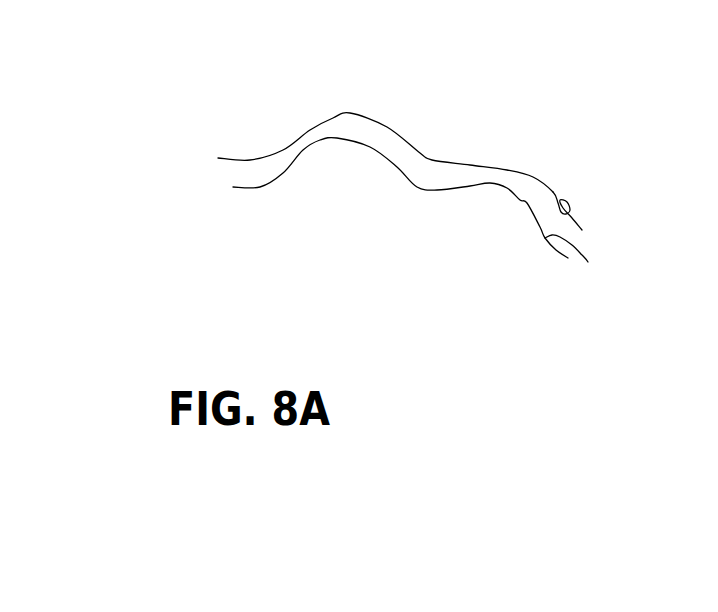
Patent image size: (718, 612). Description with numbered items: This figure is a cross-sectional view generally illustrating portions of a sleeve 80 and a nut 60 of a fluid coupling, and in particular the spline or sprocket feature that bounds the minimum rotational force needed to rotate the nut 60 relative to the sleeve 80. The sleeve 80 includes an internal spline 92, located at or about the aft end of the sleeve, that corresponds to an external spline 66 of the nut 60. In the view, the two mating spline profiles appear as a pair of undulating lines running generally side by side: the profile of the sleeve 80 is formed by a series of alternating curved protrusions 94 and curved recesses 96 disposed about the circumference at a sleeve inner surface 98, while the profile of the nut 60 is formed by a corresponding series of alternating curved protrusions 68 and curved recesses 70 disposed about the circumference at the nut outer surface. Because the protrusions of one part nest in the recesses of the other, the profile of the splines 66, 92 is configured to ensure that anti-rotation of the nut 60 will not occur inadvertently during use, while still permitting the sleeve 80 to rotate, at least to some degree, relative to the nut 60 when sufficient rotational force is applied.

The nut 60 is at (460, 184).
The external spline 66 is at (588, 262).
The curved protrusions 68 is at (400, 227).
The curved recesses 70 is at (418, 192).
The sleeve 80 is at (508, 167).
The internal spline 92 is at (627, 195).
The curved protrusions 94 is at (407, 121).
The curved recesses 96 is at (407, 121).
The sleeve inner surface 98 is at (572, 212).